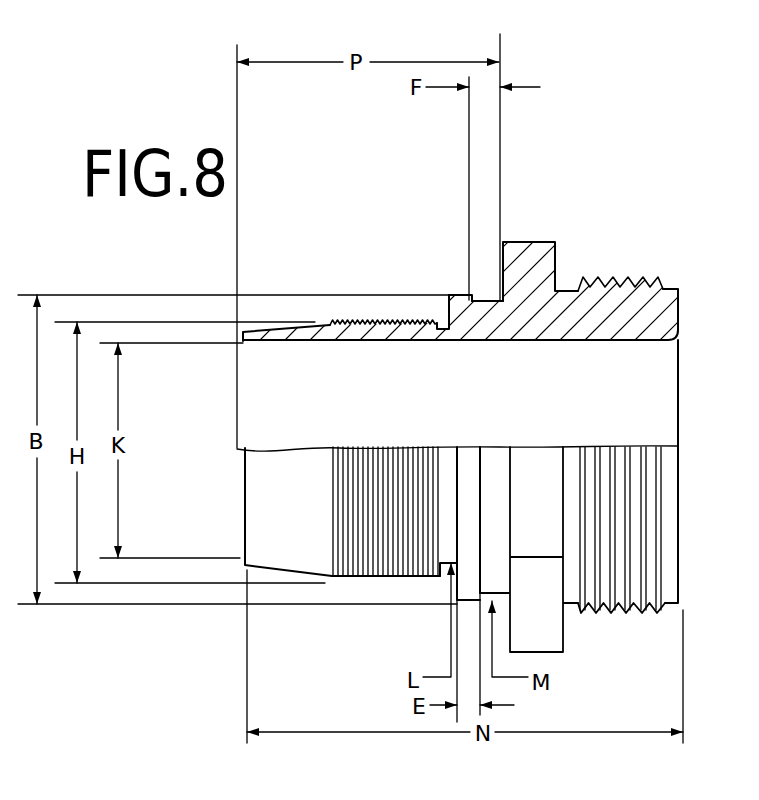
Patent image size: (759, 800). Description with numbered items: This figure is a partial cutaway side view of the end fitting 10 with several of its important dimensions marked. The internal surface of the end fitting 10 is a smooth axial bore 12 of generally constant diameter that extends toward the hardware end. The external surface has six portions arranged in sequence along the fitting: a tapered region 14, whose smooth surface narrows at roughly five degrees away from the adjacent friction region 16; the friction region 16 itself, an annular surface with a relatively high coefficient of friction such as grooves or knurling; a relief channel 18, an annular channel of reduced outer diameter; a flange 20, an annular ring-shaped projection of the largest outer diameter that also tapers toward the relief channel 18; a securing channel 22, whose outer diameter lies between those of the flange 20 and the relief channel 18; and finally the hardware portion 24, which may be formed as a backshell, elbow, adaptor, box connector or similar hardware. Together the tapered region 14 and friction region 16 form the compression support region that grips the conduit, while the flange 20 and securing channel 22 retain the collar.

The end fitting 10 is at (205, 256).
The axial bore 12 is at (365, 395).
The tapered region 14 is at (272, 327).
The friction region 16 is at (362, 324).
The relief channel 18 is at (440, 326).
The flange 20 is at (456, 292).
The securing channel 22 is at (487, 298).
The hardware portion 24 is at (557, 262).